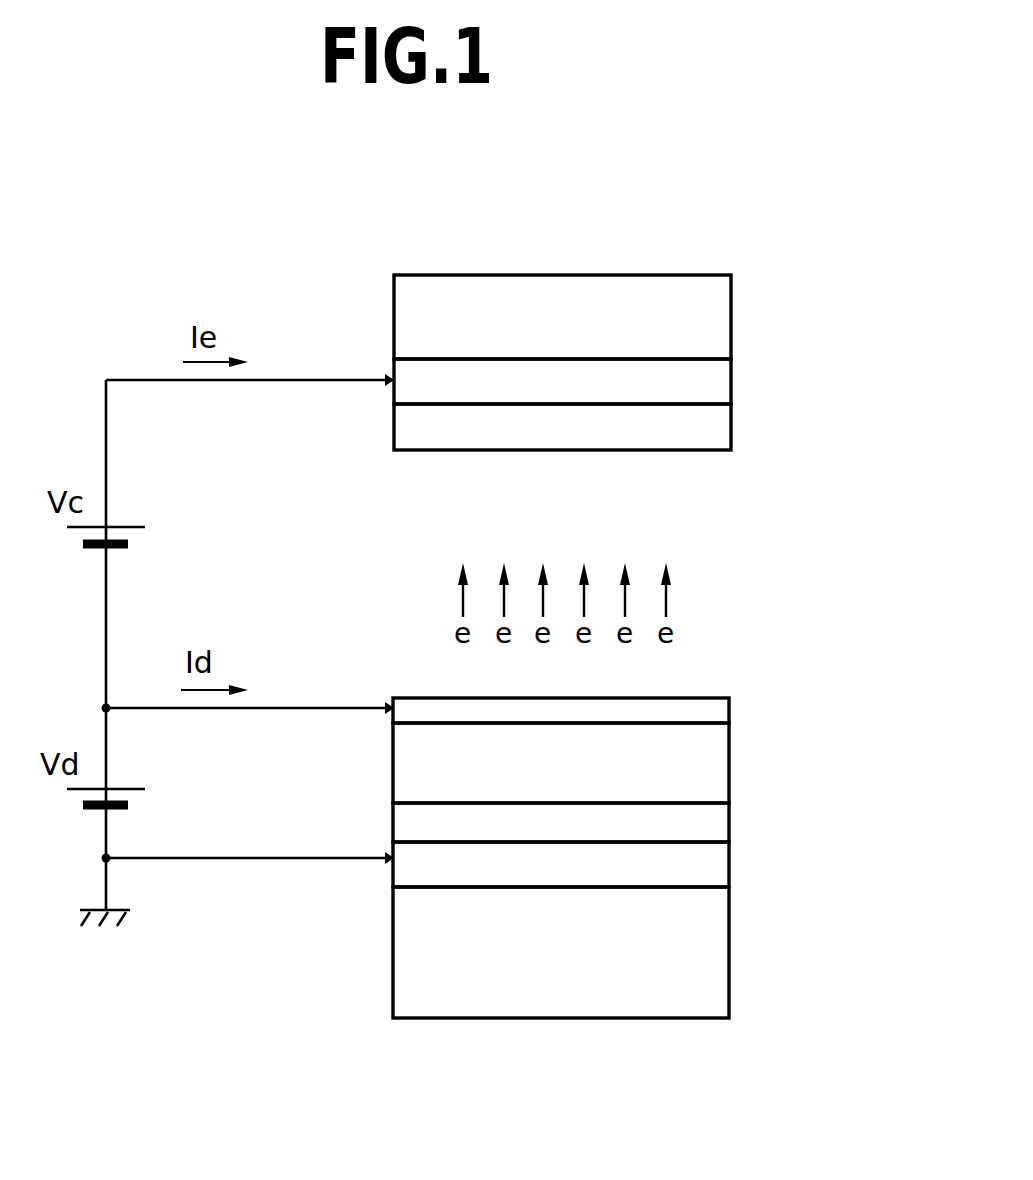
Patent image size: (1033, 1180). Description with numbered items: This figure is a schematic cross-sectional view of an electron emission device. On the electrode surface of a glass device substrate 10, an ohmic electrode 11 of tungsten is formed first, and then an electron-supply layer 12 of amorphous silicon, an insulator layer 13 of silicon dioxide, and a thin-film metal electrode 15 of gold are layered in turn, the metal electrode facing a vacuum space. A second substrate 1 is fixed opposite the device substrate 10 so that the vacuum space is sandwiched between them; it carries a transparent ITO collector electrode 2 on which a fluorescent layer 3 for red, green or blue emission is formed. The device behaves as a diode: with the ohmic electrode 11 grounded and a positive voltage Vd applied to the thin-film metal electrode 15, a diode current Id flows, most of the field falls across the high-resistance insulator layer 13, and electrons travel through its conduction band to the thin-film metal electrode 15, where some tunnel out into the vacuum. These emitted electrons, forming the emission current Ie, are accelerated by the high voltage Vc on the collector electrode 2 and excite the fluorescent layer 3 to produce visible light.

The second substrate 1 is at (725, 310).
The collector electrode 2 is at (724, 392).
The fluorescent layer 3 is at (723, 428).
The device substrate 10 is at (722, 940).
The ohmic electrode 11 is at (723, 865).
The electron-supply layer 12 is at (720, 830).
The insulator layer 13 is at (720, 775).
The thin-film metal electrode 15 is at (724, 712).